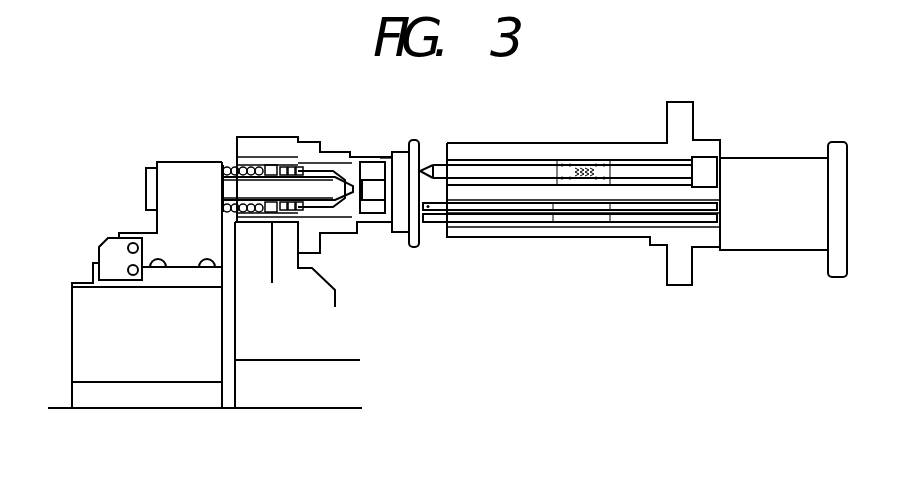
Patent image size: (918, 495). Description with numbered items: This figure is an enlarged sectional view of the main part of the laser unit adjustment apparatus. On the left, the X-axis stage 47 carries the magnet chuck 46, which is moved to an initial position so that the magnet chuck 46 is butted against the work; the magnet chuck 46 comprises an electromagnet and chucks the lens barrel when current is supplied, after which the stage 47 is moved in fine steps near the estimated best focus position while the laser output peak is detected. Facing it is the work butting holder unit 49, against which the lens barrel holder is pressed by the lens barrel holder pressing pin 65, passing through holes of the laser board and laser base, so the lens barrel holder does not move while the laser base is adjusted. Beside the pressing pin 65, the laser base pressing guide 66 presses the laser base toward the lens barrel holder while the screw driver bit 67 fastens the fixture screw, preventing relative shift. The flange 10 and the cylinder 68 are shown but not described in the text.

The flange 10 is at (398, 158).
The magnet chuck 46 is at (270, 168).
The X-axis stage 47 is at (152, 370).
The work butting holder unit 49 is at (338, 225).
The lens barrel holder pressing pin 65 is at (495, 173).
The laser base pressing guide 66 is at (427, 223).
The screw driver bit 67 is at (637, 212).
The cylinder 68 is at (745, 238).